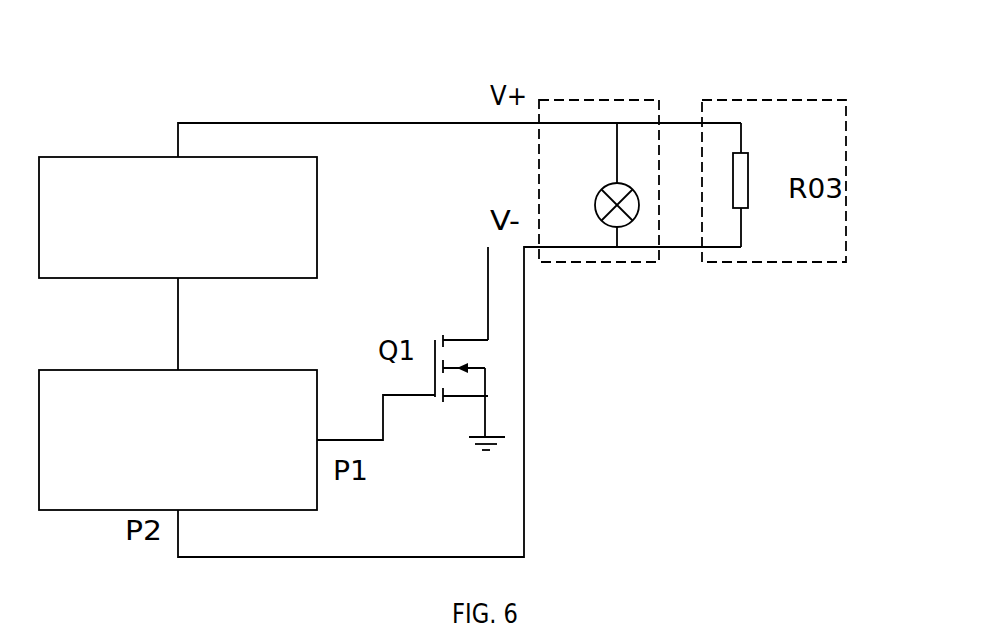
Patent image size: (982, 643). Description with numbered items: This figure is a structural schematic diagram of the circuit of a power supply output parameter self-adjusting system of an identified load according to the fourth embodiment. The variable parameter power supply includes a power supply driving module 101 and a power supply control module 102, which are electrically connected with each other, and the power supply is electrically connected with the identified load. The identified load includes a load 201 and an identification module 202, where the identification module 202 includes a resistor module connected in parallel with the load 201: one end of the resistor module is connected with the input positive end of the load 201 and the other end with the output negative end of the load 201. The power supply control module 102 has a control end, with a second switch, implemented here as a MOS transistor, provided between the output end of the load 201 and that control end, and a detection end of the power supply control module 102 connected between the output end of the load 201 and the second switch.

The power supply driving module 101 is at (178, 217).
The power supply control module 102 is at (178, 440).
The load 201 is at (624, 147).
The identification module 202 is at (794, 147).